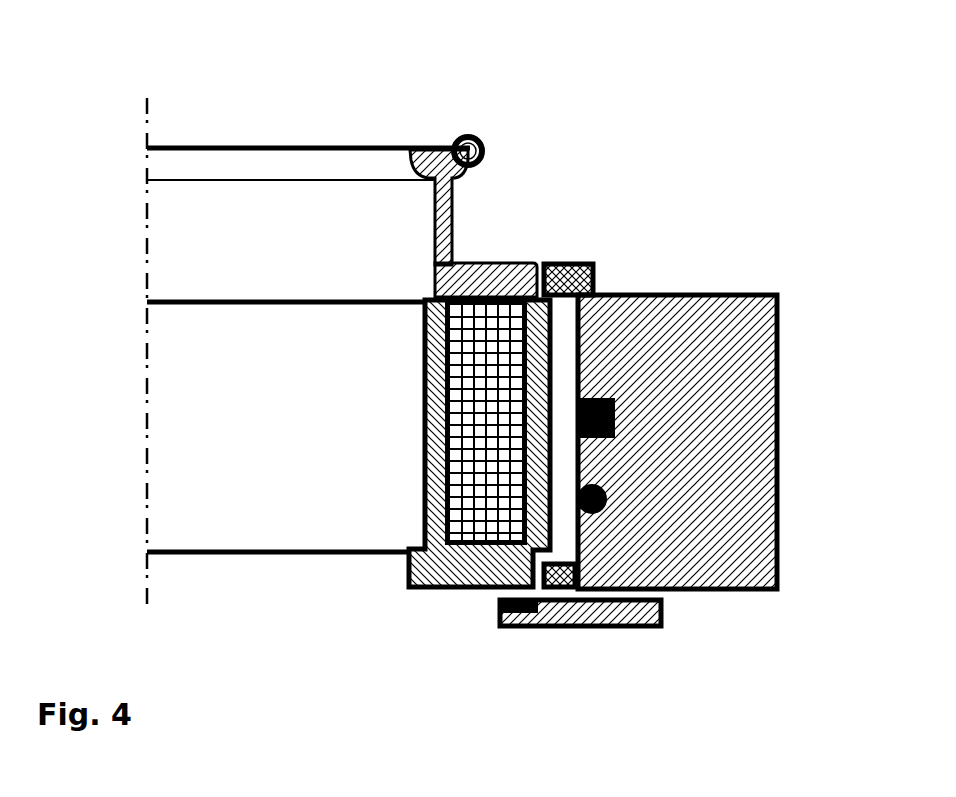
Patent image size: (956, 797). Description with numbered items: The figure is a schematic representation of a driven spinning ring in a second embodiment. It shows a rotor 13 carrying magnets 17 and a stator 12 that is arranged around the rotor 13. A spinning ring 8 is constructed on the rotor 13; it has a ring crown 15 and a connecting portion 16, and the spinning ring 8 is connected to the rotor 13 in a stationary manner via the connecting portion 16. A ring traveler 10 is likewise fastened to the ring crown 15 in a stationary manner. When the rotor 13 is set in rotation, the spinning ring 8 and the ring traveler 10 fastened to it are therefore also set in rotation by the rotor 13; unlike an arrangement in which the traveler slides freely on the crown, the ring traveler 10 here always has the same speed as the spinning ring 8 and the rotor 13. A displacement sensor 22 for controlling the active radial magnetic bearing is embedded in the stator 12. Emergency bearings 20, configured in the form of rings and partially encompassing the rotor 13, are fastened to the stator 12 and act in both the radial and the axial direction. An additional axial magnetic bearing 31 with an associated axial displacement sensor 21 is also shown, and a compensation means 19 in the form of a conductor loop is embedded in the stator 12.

The spinning ring 8 is at (240, 208).
The ring traveler 10 is at (469, 135).
The stator 12 is at (750, 477).
The rotor 13 is at (440, 568).
The ring crown 15 is at (436, 152).
The connecting portion 16 is at (483, 260).
The magnets 17 is at (473, 432).
The compensation means 19 is at (613, 398).
The emergency bearings 20 is at (575, 263).
The axial displacement sensor 21 is at (520, 625).
The displacement sensor 22 is at (603, 508).
The axial magnetic bearing 31 is at (655, 627).